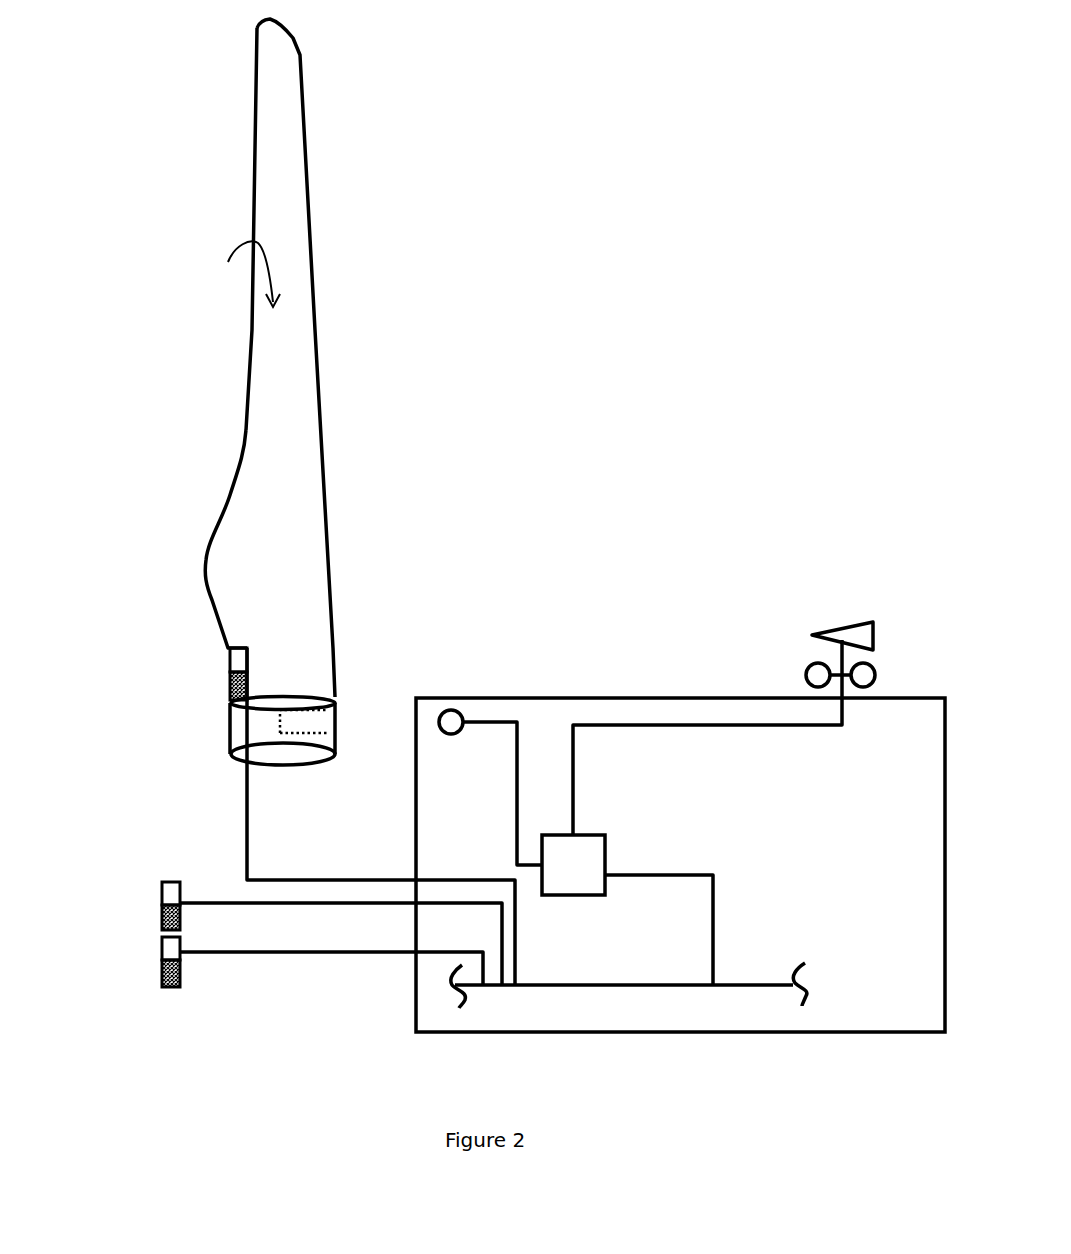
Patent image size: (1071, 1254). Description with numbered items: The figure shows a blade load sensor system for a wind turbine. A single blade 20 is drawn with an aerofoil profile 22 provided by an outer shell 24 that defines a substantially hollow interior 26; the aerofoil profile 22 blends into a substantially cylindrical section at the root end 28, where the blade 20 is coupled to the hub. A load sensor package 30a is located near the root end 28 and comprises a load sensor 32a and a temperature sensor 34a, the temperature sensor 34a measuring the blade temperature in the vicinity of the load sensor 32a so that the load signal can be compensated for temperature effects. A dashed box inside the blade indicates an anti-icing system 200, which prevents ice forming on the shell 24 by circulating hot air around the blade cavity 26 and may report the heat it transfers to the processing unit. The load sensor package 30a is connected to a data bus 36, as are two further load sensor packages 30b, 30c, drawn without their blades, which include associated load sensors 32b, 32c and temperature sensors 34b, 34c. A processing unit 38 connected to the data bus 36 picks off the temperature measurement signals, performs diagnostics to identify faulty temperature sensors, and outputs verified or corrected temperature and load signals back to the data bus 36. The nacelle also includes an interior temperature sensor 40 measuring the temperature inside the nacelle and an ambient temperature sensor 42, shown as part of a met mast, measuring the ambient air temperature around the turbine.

The blade 20 is at (272, 167).
The aerofoil profile 22 is at (245, 274).
The outer shell 24 is at (237, 481).
The hollow interior 26 is at (246, 812).
The root end 28 is at (230, 735).
The anti-icing system 200 is at (307, 722).
The load sensor package 30a is at (173, 674).
The load sensor 32a is at (230, 662).
The temperature sensor 34a is at (230, 689).
The load sensor package 30b is at (266, 933).
The load sensor 32b is at (162, 895).
The temperature sensor 34b is at (162, 918).
The load sensor package 30c is at (258, 962).
The load sensor 32c is at (162, 951).
The temperature sensor 34c is at (162, 975).
The data bus 36 is at (692, 988).
The processing unit 38 is at (572, 857).
The interior temperature sensor 40 is at (452, 718).
The ambient temperature sensor 42 is at (806, 608).